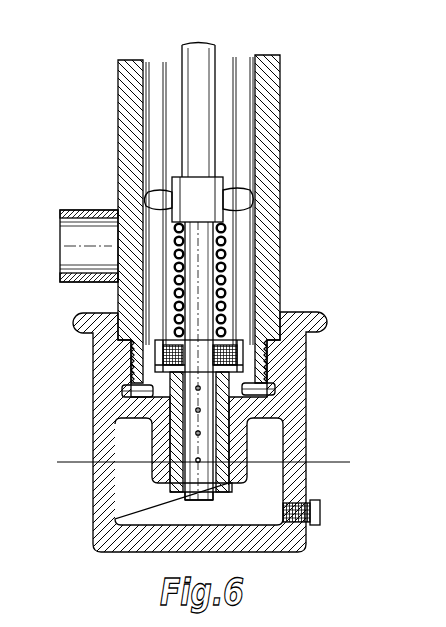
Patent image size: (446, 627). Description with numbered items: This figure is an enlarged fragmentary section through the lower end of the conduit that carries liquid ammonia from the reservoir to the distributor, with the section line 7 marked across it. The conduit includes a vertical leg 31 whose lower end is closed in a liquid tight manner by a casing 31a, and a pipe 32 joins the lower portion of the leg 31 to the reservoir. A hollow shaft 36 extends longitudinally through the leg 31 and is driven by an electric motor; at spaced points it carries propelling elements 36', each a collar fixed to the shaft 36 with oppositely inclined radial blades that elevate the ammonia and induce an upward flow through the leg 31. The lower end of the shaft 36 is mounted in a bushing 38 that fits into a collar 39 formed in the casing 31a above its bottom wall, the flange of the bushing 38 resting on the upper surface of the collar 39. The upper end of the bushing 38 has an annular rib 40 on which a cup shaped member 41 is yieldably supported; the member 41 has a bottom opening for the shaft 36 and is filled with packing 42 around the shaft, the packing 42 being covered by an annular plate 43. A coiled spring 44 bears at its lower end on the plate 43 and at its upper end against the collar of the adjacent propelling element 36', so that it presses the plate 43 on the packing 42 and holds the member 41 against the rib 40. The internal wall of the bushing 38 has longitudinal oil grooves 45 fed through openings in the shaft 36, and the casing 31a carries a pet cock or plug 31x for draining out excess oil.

The vertical leg 31 is at (265, 112).
The casing 31a is at (209, 432).
The pet cock or plug 31x is at (322, 512).
The pipe 32 is at (78, 191).
The shaft 36 is at (220, 265).
The propelling element 36' is at (230, 188).
The bushing 38 is at (232, 494).
The collar 39 is at (243, 446).
The annular rib 40 is at (236, 390).
The cup shaped member 41 is at (268, 362).
The packing 42 is at (165, 362).
The annular plate 43 is at (228, 340).
The coiled spring 44 is at (228, 284).
The oil groove 45 is at (182, 500).
The section line 7- 7 is at (337, 462).